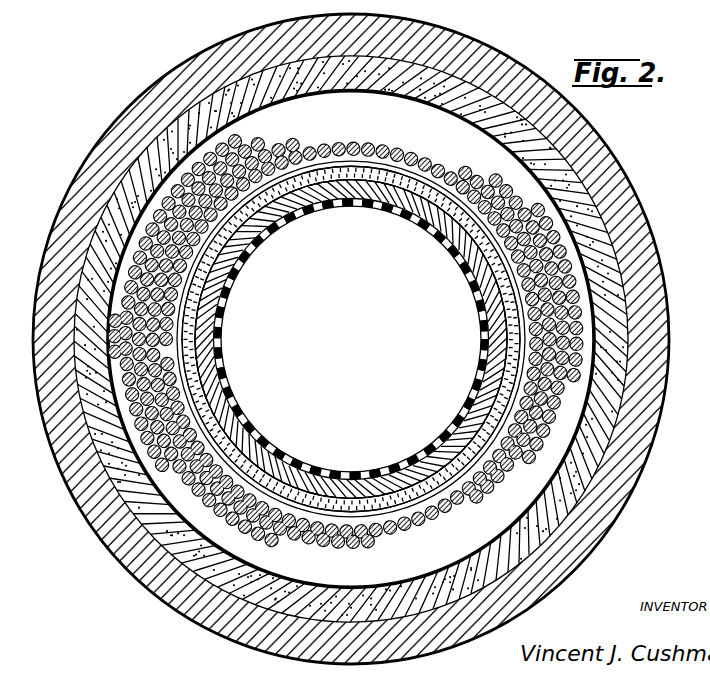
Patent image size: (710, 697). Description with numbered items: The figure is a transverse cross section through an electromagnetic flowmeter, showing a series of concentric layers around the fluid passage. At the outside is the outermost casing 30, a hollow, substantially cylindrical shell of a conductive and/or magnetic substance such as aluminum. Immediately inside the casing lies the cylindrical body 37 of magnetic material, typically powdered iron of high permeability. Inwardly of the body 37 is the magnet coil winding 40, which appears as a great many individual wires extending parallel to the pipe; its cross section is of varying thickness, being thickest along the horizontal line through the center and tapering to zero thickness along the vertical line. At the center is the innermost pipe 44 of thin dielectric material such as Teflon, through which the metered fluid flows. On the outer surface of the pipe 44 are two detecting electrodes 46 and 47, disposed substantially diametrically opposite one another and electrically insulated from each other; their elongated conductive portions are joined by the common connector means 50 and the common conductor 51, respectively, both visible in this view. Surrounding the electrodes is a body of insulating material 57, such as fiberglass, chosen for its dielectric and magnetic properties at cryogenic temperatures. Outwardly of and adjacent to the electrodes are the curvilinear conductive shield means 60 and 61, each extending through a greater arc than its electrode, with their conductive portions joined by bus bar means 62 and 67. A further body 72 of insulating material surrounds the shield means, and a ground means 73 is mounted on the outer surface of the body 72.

The outermost casing 30 is at (469, 41).
The cylindrical body 37 is at (323, 592).
The magnet coil winding 40 is at (284, 151).
The innermost pipe 44 is at (338, 476).
The detecting electrode 46 is at (217, 327).
The detecting electrode 47 is at (486, 330).
The common connector means 50 is at (255, 232).
The common conductor 51 is at (433, 214).
The body of insulating material 57 is at (284, 468).
The shield means 60 is at (200, 290).
The shield means 61 is at (488, 280).
The common conductor or bus bar means 62 is at (340, 173).
The common conductor or bus bar means 67 is at (367, 177).
The body of insulating material 72 is at (339, 200).
The ground means 73 is at (327, 167).